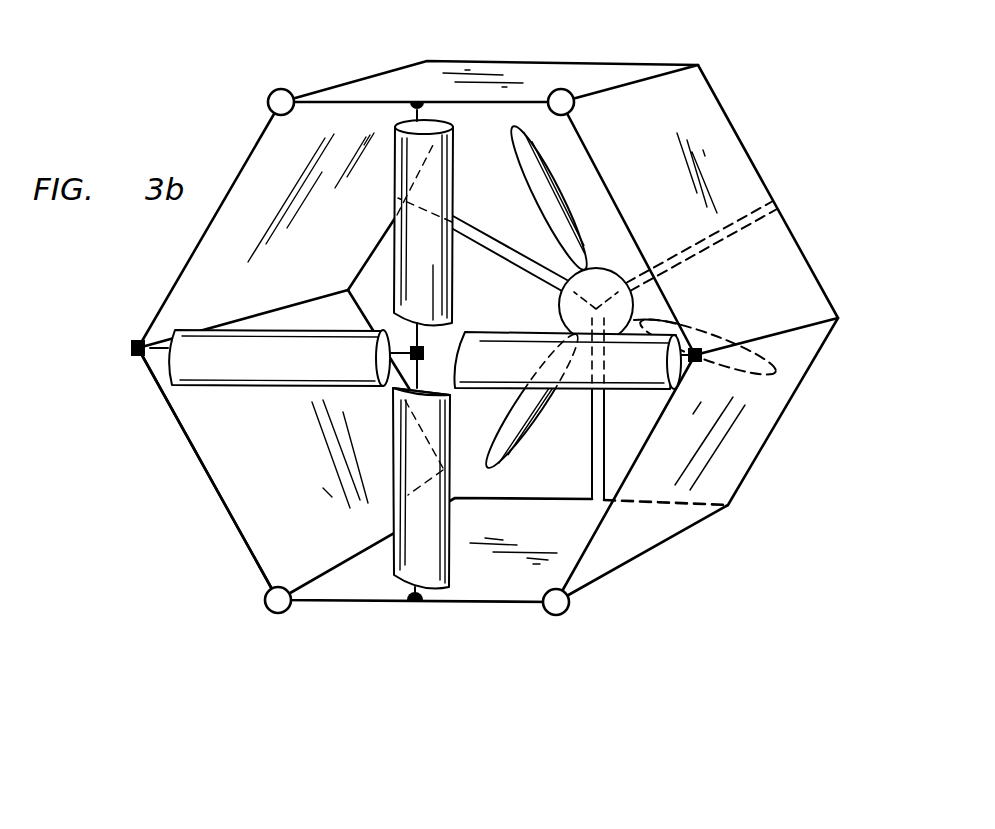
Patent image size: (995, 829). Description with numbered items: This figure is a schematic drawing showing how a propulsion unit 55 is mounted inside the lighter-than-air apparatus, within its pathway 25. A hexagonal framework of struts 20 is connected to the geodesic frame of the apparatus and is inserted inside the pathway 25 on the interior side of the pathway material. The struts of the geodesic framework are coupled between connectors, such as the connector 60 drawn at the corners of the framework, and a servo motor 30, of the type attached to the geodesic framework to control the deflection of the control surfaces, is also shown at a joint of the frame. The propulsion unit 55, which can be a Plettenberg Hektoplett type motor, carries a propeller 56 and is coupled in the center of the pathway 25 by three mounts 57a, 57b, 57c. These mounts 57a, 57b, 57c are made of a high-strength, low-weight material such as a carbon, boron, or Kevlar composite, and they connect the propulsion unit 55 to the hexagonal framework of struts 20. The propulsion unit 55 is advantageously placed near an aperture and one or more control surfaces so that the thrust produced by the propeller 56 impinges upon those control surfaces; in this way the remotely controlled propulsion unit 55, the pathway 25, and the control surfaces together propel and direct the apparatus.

The struts 20 is at (657, 63).
The pathway 25 is at (263, 473).
The servo motor 30 is at (130, 357).
The propulsion unit 55 is at (565, 310).
The propeller 56 is at (627, 310).
The mount 57a is at (478, 228).
The mount 57b is at (731, 243).
The mount 57c is at (587, 432).
The connector 60 is at (262, 607).